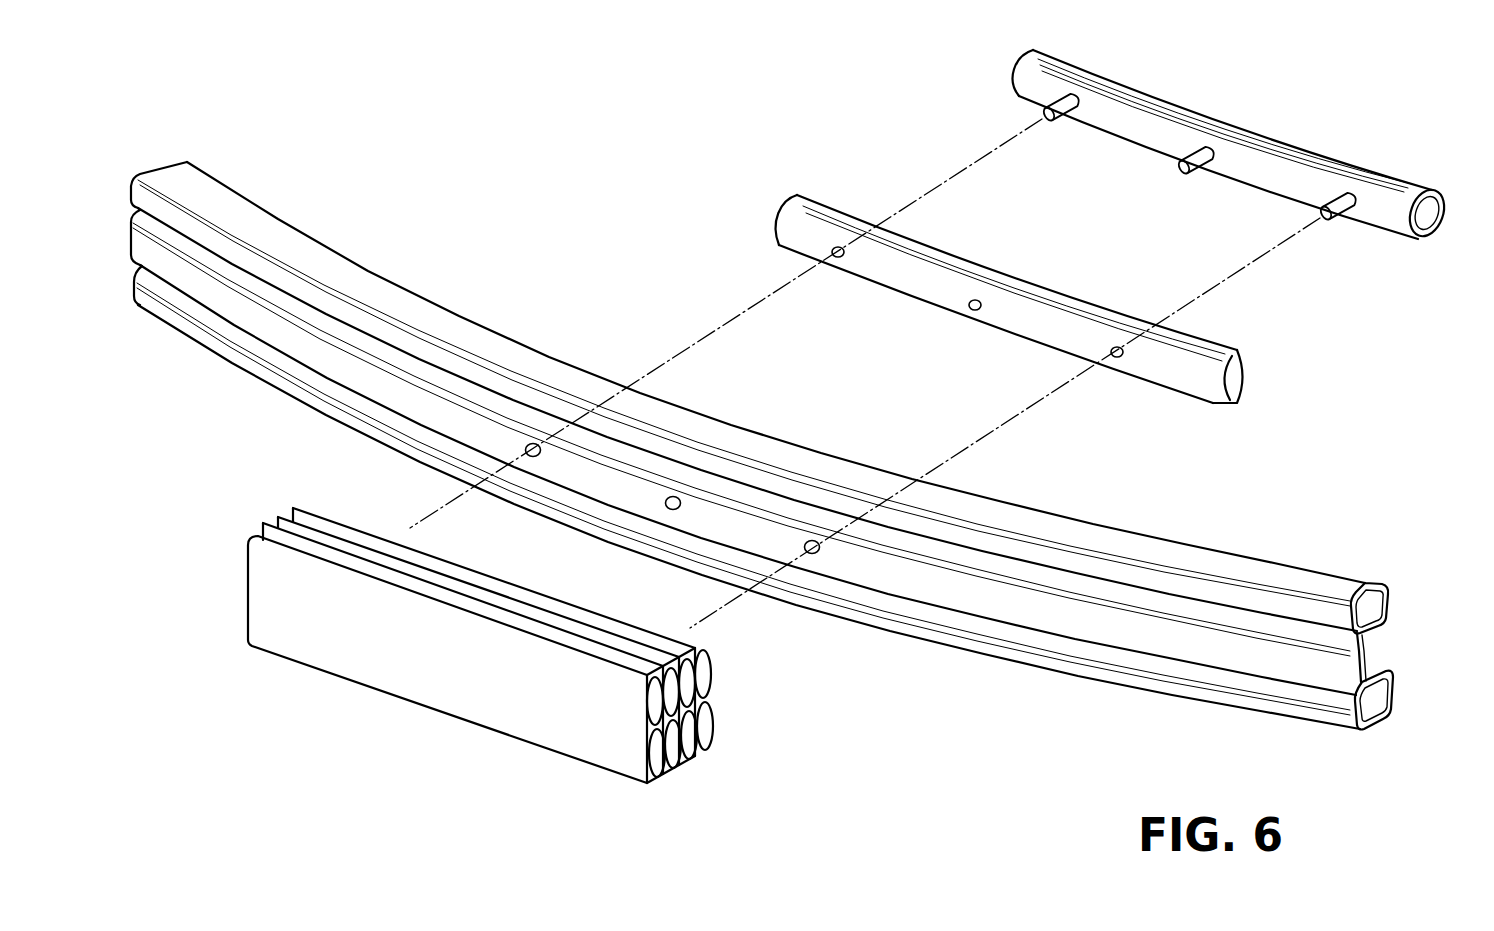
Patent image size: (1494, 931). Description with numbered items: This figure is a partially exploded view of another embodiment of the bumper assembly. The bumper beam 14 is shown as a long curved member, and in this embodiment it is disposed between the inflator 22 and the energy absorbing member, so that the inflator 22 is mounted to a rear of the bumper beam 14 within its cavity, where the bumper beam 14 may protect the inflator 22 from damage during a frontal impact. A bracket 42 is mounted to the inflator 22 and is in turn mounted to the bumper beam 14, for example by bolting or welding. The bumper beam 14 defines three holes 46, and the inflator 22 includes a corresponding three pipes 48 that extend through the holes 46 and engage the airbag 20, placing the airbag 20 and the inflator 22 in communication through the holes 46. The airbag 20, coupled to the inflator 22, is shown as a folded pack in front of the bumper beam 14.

The bumper beam 14 is at (296, 257).
The airbag 20 is at (277, 598).
The inflator 22 is at (1027, 77).
The bracket 42 is at (797, 227).
The hole 46 is at (808, 551).
The pipe 48 is at (1328, 212).